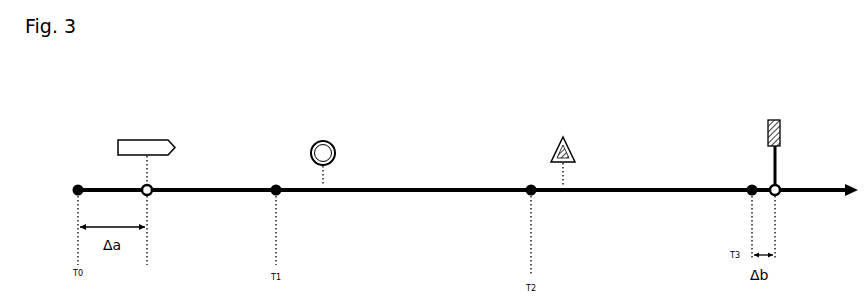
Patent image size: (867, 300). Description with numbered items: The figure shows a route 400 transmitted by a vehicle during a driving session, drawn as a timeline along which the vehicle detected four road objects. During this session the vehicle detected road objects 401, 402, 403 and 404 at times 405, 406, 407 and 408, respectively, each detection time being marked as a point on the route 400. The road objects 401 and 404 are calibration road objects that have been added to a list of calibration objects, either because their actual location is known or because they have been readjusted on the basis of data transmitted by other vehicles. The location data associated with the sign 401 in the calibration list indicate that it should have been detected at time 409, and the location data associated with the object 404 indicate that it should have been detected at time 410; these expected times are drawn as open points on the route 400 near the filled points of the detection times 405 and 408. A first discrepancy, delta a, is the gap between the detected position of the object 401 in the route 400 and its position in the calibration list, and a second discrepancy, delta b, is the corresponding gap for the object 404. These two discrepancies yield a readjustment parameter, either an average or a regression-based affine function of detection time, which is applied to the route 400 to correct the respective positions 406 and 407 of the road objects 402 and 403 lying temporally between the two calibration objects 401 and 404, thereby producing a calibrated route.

The route 400 is at (440, 188).
The calibration road object 401 is at (118, 147).
The road object 402 is at (312, 146).
The road object 403 is at (553, 143).
The calibration road object 404 is at (768, 128).
The detection time 405 is at (75, 186).
The detection time 406 is at (273, 186).
The detection time 407 is at (527, 187).
The detection time 408 is at (748, 187).
The expected detection time 409 is at (152, 194).
The expected detection time 410 is at (780, 194).